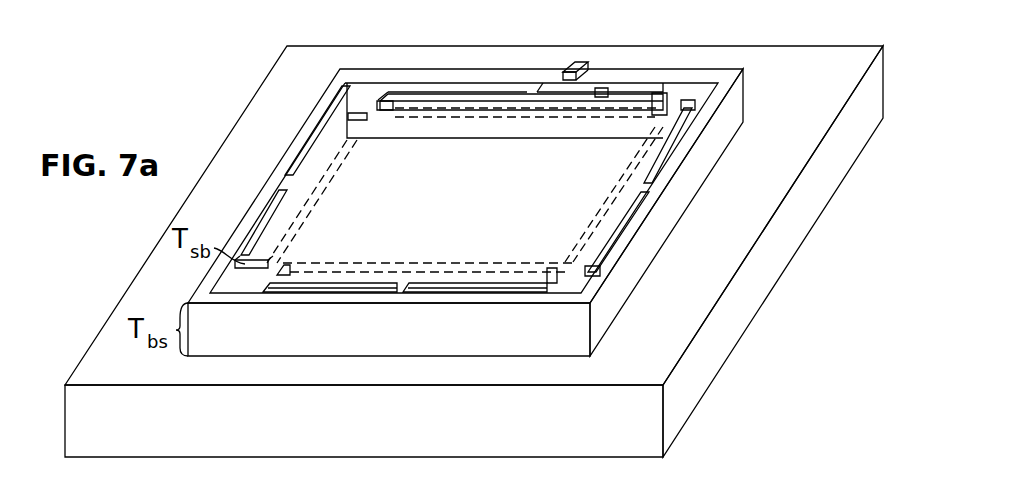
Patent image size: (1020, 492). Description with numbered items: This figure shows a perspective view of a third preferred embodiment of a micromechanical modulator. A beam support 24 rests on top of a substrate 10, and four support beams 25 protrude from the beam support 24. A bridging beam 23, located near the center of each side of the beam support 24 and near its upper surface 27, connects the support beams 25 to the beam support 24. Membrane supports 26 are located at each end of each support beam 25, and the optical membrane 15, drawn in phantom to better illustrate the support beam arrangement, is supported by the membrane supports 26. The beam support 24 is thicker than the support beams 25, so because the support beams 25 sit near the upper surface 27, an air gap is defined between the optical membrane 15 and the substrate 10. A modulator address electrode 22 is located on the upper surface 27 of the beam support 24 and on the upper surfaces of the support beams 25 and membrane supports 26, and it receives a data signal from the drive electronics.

The substrate 10 is at (651, 376).
The optical membrane 15 is at (474, 220).
The modulator address electrode 22 is at (600, 88).
The bridging beam 23 is at (522, 92).
The beam support 24 is at (718, 134).
The support beam 25 is at (433, 96).
The membrane support 26 is at (686, 108).
The upper surface 27 is at (745, 68).